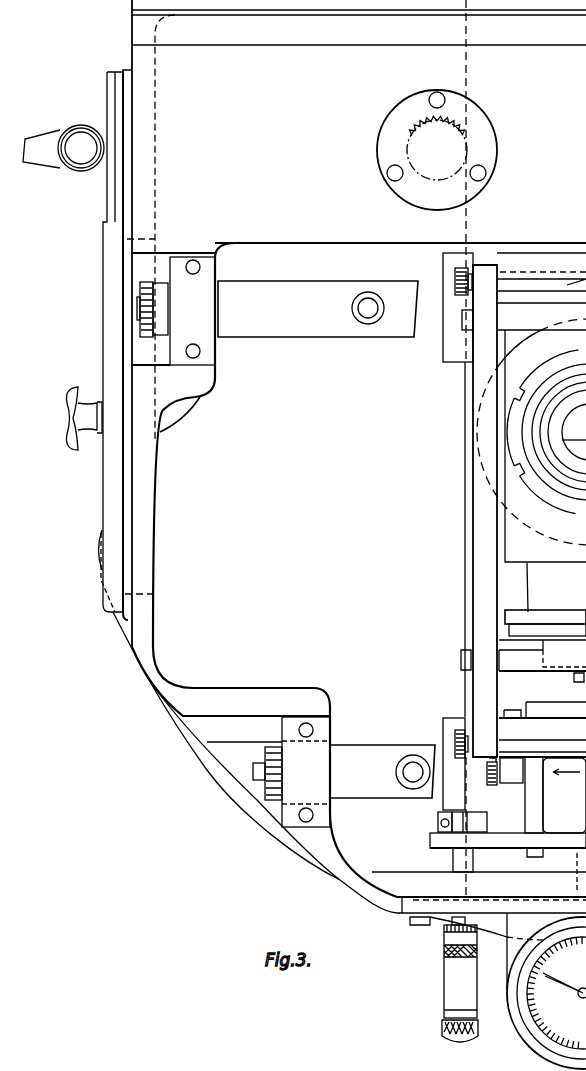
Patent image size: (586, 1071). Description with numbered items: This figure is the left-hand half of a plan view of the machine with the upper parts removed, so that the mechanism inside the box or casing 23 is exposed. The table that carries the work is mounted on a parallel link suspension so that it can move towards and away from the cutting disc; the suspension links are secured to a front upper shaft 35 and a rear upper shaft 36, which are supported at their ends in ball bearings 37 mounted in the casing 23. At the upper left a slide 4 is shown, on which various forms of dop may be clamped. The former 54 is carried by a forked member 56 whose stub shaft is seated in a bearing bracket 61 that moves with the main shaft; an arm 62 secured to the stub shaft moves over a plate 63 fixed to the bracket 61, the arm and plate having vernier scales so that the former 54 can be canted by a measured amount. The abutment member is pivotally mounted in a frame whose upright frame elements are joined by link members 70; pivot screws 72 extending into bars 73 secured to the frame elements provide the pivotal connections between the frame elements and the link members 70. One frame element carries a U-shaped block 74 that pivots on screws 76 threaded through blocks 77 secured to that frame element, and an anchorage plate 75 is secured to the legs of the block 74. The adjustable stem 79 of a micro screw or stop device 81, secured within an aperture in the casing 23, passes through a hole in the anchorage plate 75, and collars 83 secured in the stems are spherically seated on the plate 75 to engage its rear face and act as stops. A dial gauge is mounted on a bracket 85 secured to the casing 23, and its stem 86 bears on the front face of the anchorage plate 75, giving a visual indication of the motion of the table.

The slide 4 is at (253, 772).
The box or casing 23 is at (143, 647).
The front upper shaft 35 is at (367, 758).
The rear upper shaft 36 is at (318, 309).
The ball bearings 37 is at (245, 826).
The former 54 is at (527, 523).
The forked member 56 is at (513, 523).
The bearing bracket 61 is at (562, 597).
The arm 62 is at (520, 630).
The plate 63 is at (513, 618).
The link members 70 is at (487, 677).
The pivot screws 72 is at (455, 280).
The bars 73 is at (549, 752).
The U-shaped block 74 is at (543, 710).
The anchorage plate 75 is at (523, 842).
The screws 76 is at (490, 775).
The blocks 77 is at (513, 773).
The adjustable stem 79 is at (455, 858).
The micro screw or stop device 81 is at (463, 980).
The collars 83 is at (438, 823).
The bracket 85 is at (525, 1037).
The stem of the dial gauge 86 is at (585, 860).